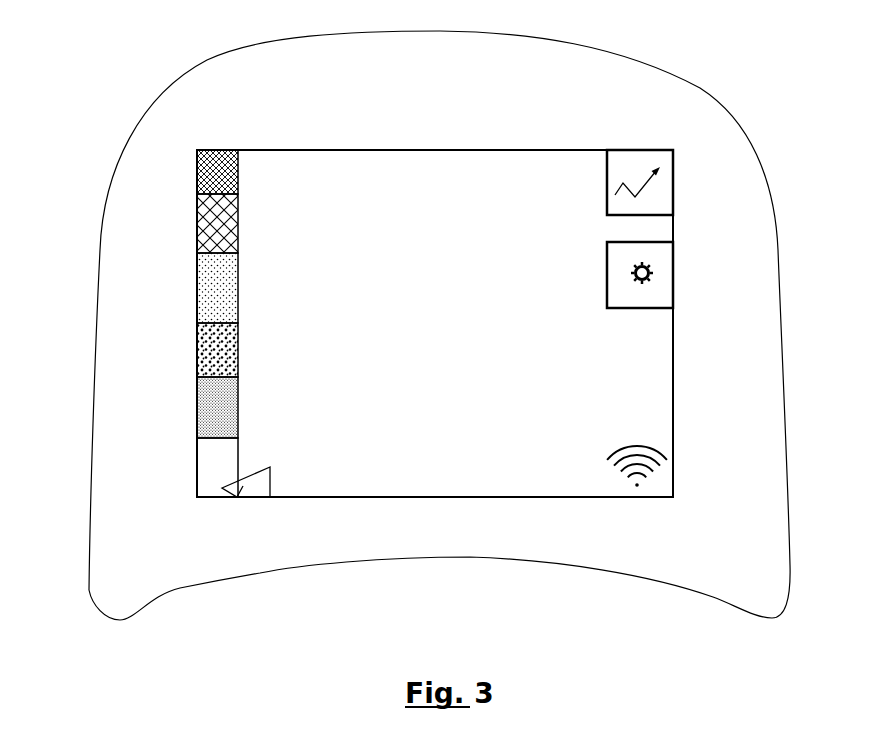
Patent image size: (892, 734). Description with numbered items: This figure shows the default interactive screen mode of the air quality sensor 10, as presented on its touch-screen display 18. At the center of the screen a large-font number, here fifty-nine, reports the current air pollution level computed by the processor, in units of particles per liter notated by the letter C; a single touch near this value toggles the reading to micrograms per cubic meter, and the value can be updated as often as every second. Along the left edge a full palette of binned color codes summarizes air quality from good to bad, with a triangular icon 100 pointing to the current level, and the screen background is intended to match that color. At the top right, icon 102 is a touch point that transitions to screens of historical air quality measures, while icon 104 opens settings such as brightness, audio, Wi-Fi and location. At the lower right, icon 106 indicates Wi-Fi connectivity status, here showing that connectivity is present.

The air quality sensor 10 is at (657, 70).
The touch-screen display 18 is at (382, 470).
The triangular icon 100 is at (243, 474).
The icon 102 is at (658, 160).
The icon 104 is at (655, 255).
The icon 106 is at (659, 474).